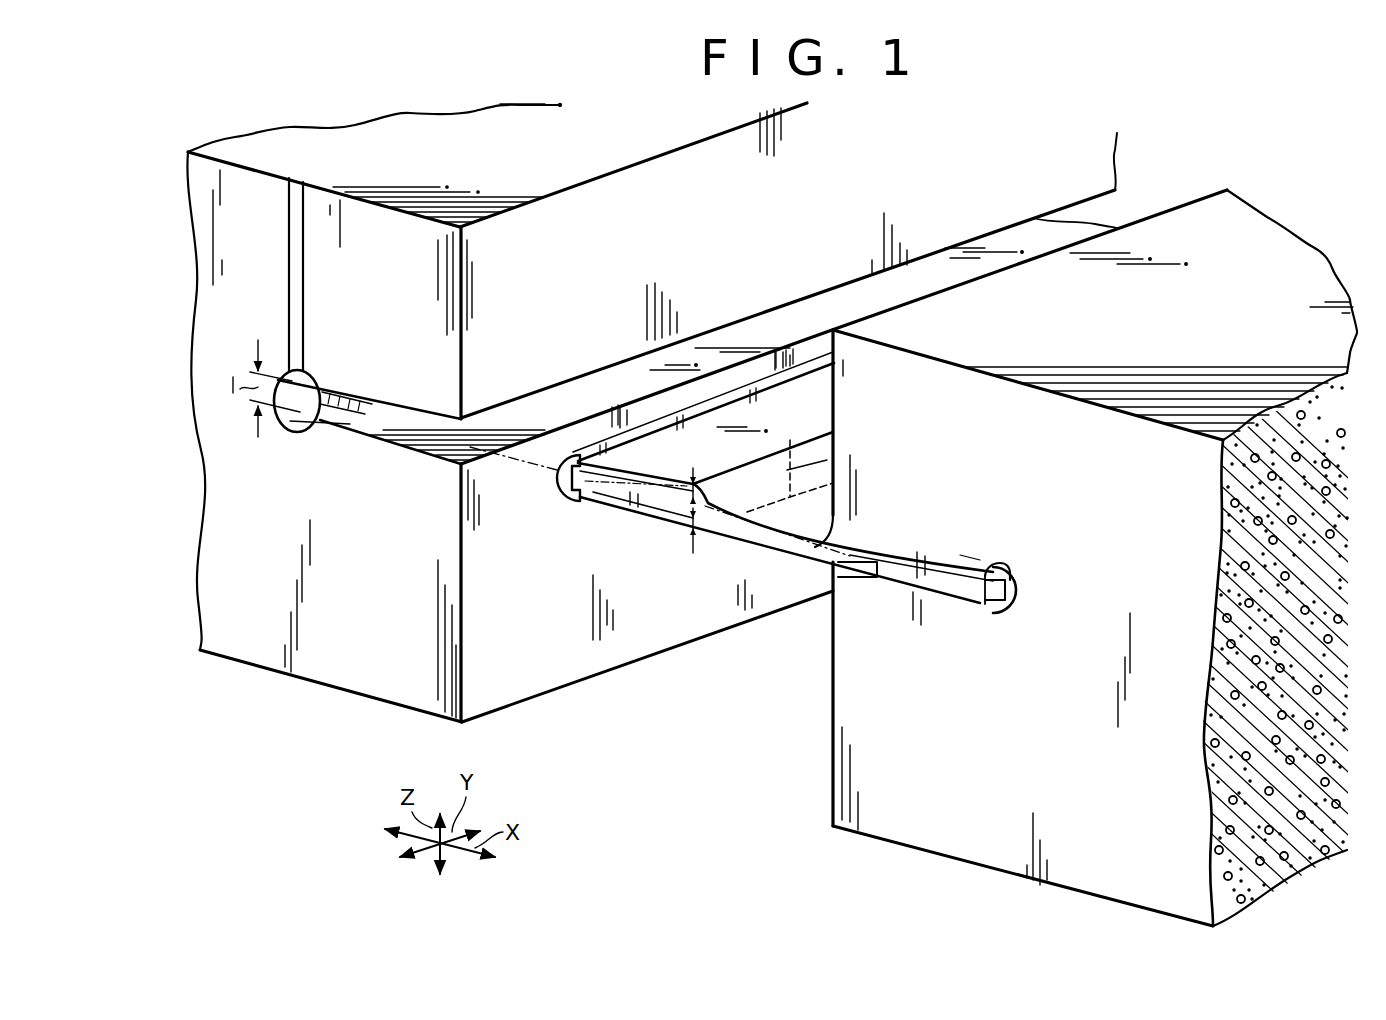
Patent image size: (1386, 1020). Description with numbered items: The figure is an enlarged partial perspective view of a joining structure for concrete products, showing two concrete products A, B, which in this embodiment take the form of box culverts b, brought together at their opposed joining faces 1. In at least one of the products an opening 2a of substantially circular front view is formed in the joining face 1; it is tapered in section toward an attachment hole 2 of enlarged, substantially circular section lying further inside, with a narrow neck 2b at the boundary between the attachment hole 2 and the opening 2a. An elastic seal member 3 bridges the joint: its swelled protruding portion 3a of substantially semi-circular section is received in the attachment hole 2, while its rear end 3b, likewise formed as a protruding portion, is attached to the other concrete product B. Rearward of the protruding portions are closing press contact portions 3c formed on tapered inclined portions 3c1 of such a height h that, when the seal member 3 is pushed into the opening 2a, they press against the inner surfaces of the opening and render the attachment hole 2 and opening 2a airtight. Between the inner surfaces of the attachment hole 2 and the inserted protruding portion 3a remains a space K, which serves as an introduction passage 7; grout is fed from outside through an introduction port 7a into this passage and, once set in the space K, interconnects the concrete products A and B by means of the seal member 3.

The joining face 1 is at (625, 185).
The attachment hole 2 is at (297, 390).
The opening 2a is at (572, 393).
The neck 2b is at (332, 395).
The seal member 3 is at (790, 528).
The protruding portion 3a is at (557, 491).
The rear end 3b is at (1018, 583).
The closing press contact portion 3c is at (780, 443).
The tapered inclined portion 3c1 is at (643, 464).
The introduction passage 7 is at (993, 568).
The introduction port 7a is at (292, 180).
The concrete product A is at (426, 168).
The concrete product B is at (1247, 226).
The box culvert b is at (483, 198).
The space K is at (960, 555).
The height h is at (697, 487).